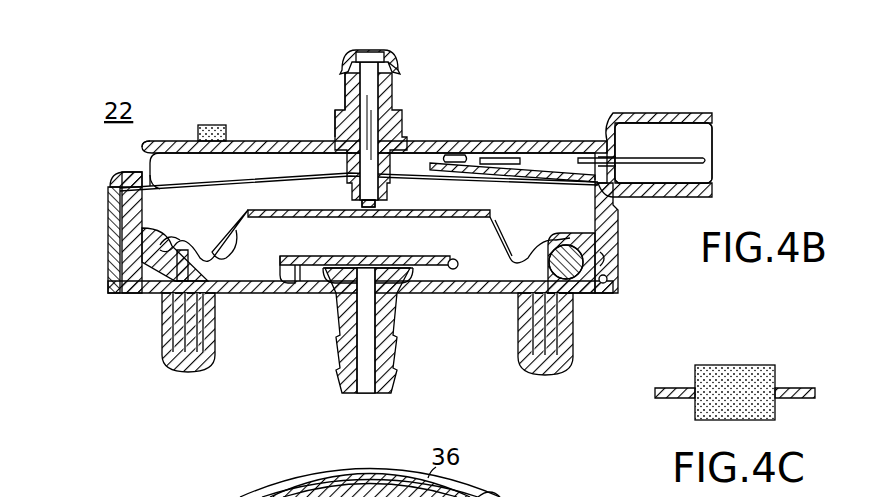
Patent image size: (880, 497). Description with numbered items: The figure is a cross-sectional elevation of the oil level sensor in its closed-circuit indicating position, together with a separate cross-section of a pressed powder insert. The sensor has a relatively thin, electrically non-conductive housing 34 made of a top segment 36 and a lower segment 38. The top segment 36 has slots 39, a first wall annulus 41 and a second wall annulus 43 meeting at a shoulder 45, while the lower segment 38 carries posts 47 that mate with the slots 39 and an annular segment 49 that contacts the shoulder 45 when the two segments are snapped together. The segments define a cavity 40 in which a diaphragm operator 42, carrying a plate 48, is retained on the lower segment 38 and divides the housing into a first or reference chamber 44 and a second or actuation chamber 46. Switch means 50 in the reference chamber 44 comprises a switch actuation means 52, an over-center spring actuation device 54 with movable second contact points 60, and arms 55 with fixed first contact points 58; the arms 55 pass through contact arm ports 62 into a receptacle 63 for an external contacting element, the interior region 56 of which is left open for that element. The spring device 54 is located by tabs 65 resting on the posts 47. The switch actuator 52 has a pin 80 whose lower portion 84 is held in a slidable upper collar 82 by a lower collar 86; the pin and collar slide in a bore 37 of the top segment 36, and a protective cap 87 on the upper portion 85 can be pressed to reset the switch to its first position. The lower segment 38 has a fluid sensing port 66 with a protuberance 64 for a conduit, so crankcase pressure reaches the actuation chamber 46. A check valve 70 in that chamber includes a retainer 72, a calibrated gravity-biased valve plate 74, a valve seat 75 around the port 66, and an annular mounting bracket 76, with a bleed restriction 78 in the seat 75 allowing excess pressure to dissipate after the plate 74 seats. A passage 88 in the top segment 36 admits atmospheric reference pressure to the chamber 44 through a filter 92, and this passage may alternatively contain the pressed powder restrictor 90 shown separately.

In FIG. 4B, the housing 34 is at (137, 151).
In FIG. 4C, the housing 34 is at (795, 388).
In FIG. 4B, the top segment 36 is at (160, 141).
In FIG. 4B, the bore or actuator port 37 is at (350, 127).
In FIG. 4B, the lower segment 38 is at (592, 296).
In FIG. 4B, the slots 39 is at (482, 494).
In FIG. 4B, the cavity 40 is at (142, 238).
In FIG. 4B, the first wall annulus 41 is at (595, 212).
In FIG. 4B, the diaphragm operator 42 is at (500, 236).
In FIG. 4B, the second wall annulus 43 is at (608, 280).
In FIG. 4B, the first or reference chamber 44 is at (377, 163).
In FIG. 4B, the shoulder 45 is at (592, 246).
In FIG. 4B, the second or actuation chamber 46 is at (217, 240).
In FIG. 4B, the posts 47 is at (142, 217).
In FIG. 4B, the plate 48 is at (430, 212).
In FIG. 4B, the annular segment 49 is at (604, 262).
In FIG. 4B, the switch means 50 is at (492, 162).
In FIG. 4B, the switch actuation means 52 is at (340, 98).
In FIG. 4B, the over-center spring actuation device 54 is at (204, 183).
In FIG. 4B, the arms 55 is at (688, 163).
In FIG. 4B, the fitting bore 56 is at (688, 134).
In FIG. 4B, the first contact pads or points 58 is at (455, 155).
In FIG. 4B, the second contact points 60 is at (440, 172).
In FIG. 4B, the contact arm ports 62 is at (620, 158).
In FIG. 4B, the receptacle 63 is at (645, 113).
In FIG. 4B, the protuberance 64 is at (395, 388).
In FIG. 4B, the tabs 65 is at (120, 188).
In FIG. 4B, the fluid sensing port 66 is at (368, 394).
In FIG. 4B, the check valve 70 is at (432, 257).
In FIG. 4B, the retainer 72 is at (459, 264).
In FIG. 4B, the calibrated valve plate 74 is at (305, 266).
In FIG. 4B, the valve seat 75 is at (332, 272).
In FIG. 4B, the mounting bracket 76 is at (286, 275).
In FIG. 4B, the bleed port or restriction 78 is at (416, 283).
In FIG. 4B, the pin 80 is at (372, 100).
In FIG. 4B, the upper collar 82 is at (343, 86).
In FIG. 4B, the lower portion 84 is at (365, 208).
In FIG. 4B, the upper portion 85 is at (362, 50).
In FIG. 4B, the lower collar 86 is at (347, 185).
In FIG. 4B, the protective cap 87 is at (391, 58).
In FIG. 4B, the passage 88 is at (206, 153).
In FIG. 4C, the pressed powder restrictor 90 is at (730, 365).
In FIG. 4B, the filter 92 is at (222, 125).